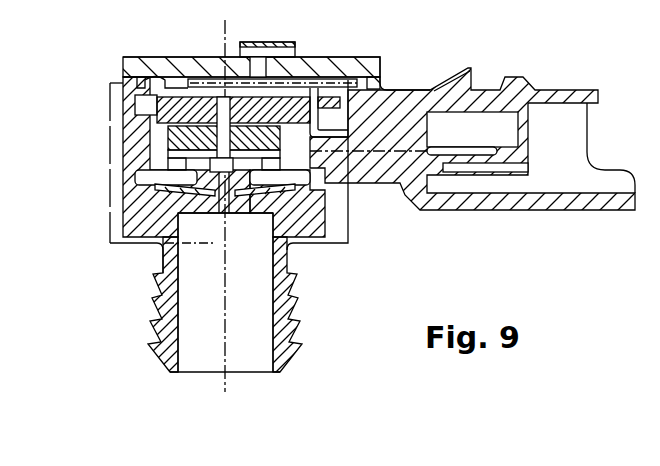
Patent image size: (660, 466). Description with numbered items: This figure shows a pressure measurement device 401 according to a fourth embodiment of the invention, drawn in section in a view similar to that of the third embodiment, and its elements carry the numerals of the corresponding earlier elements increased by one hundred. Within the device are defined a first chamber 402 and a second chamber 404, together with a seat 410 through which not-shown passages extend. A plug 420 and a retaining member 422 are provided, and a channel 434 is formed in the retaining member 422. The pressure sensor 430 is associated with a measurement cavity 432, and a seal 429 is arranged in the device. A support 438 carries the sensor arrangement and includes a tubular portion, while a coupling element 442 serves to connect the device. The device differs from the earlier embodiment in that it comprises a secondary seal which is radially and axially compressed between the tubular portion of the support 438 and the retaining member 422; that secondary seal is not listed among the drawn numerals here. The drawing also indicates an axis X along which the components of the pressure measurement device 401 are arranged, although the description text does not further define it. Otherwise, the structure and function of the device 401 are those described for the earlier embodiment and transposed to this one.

The pressure measurement device 401 is at (538, 271).
The first chamber 402 is at (240, 326).
The second chamber 404 is at (146, 169).
The seat 410 is at (294, 236).
The plug 420 is at (163, 181).
The retaining member 422 is at (162, 193).
The seal 429 is at (276, 128).
The pressure sensor 430 is at (177, 117).
The measurement cavity 432 is at (210, 130).
The channel 434 is at (220, 215).
The support 438 is at (400, 118).
The coupling element 442 is at (162, 310).
The axis X is at (109, 84).